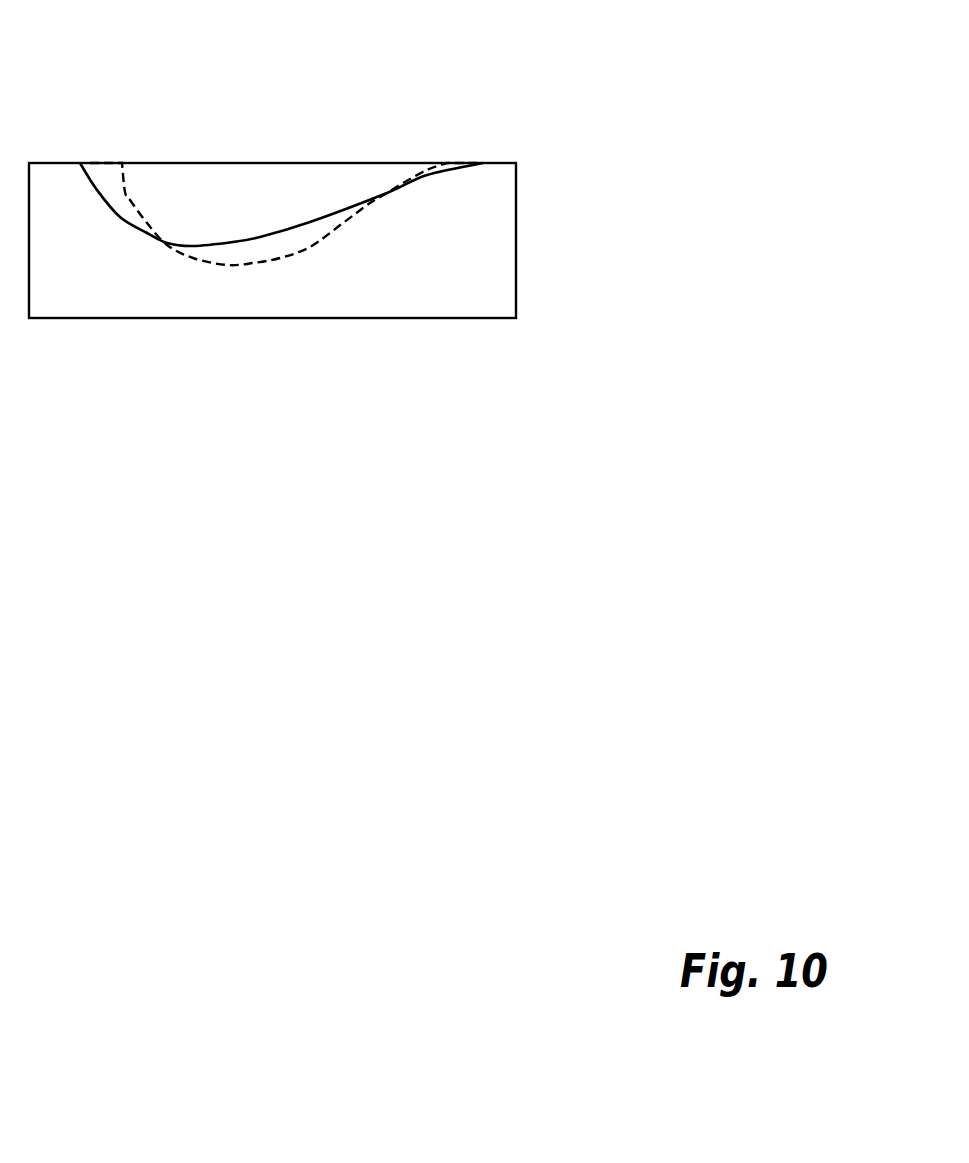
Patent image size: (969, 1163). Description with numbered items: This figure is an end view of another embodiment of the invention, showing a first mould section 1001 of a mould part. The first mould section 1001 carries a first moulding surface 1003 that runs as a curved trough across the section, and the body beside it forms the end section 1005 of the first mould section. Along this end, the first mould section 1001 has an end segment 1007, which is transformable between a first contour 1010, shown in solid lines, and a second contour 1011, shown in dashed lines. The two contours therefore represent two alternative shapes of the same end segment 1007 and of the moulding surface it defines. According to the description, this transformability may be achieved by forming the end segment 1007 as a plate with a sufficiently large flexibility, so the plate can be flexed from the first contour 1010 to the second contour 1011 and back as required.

The first mould section 1001 is at (571, 67).
The first moulding surface 1003 is at (306, 221).
The end section 1005 is at (465, 238).
The end segment 1007 is at (233, 242).
The first contour 1010 is at (82, 185).
The second contour 1011 is at (117, 180).